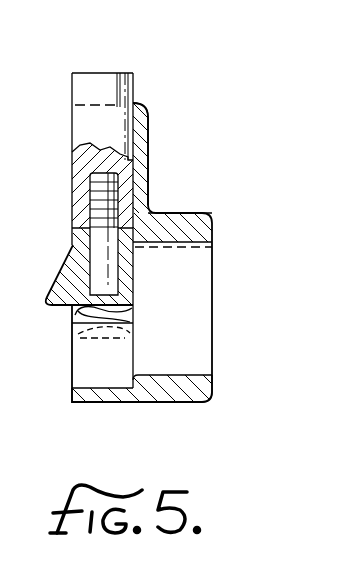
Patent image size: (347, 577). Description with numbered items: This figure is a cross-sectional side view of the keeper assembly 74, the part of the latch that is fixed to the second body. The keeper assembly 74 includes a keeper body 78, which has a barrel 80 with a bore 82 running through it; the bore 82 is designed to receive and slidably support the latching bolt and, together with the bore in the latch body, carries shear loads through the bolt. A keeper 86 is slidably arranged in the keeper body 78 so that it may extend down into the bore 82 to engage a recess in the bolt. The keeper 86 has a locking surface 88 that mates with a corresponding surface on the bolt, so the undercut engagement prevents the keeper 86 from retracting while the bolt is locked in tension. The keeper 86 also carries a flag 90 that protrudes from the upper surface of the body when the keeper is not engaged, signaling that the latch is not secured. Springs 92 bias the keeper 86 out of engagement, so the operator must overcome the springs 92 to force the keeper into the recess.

The keeper assembly 74 is at (184, 155).
The keeper body 78 is at (148, 110).
The barrel 80 is at (190, 213).
The bore 82 is at (197, 375).
The keeper 86 is at (72, 193).
The locking surface 88 is at (60, 270).
The flag 90 is at (72, 73).
The springs 92 is at (72, 313).